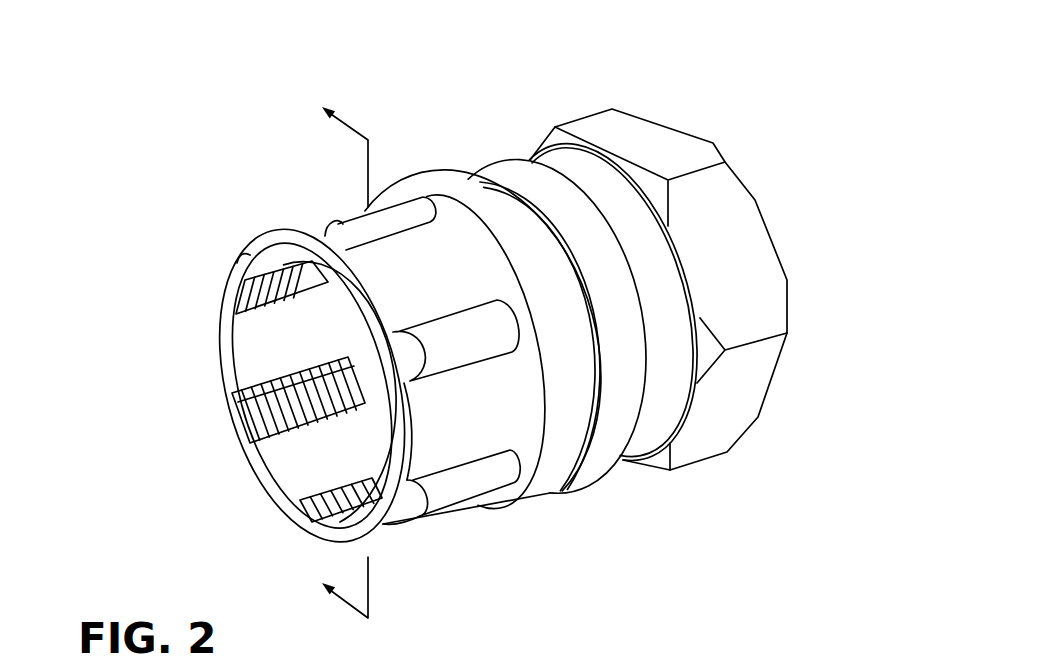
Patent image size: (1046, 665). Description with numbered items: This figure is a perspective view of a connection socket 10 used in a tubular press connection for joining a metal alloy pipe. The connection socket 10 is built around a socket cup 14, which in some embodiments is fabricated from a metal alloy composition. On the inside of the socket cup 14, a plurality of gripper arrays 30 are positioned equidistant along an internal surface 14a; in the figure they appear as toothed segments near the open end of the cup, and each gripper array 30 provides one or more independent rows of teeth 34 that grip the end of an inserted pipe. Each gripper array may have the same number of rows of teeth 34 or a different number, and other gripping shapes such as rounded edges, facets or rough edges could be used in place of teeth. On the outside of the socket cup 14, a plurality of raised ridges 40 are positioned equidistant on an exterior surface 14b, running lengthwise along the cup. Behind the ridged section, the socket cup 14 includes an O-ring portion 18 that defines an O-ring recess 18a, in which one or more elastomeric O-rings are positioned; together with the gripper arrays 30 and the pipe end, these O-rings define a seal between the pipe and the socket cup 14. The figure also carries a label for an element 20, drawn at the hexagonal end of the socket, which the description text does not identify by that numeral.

The connection socket 10 is at (478, 341).
The socket cup 14 is at (266, 230).
The internal surface 14a is at (325, 338).
The exterior surface 14b is at (452, 262).
The O-ring portion 18 is at (458, 156).
The O-ring recess 18a is at (552, 462).
The hex nut 20 is at (740, 228).
The gripper arrays 30 is at (288, 442).
The rows of teeth 34 is at (298, 312).
The raised ridges 40 is at (453, 486).